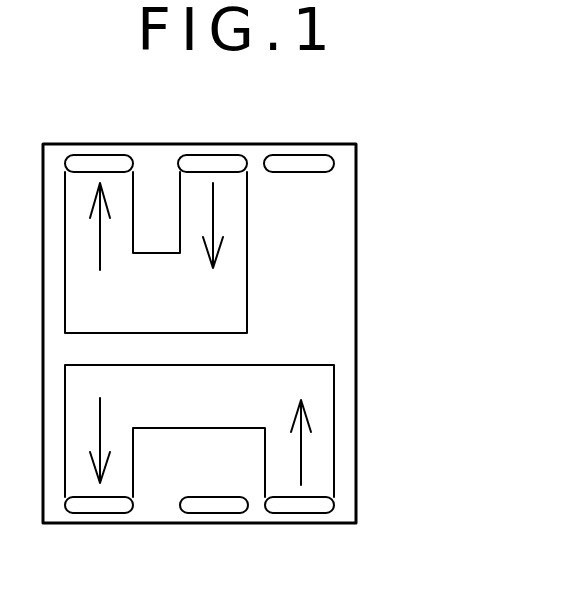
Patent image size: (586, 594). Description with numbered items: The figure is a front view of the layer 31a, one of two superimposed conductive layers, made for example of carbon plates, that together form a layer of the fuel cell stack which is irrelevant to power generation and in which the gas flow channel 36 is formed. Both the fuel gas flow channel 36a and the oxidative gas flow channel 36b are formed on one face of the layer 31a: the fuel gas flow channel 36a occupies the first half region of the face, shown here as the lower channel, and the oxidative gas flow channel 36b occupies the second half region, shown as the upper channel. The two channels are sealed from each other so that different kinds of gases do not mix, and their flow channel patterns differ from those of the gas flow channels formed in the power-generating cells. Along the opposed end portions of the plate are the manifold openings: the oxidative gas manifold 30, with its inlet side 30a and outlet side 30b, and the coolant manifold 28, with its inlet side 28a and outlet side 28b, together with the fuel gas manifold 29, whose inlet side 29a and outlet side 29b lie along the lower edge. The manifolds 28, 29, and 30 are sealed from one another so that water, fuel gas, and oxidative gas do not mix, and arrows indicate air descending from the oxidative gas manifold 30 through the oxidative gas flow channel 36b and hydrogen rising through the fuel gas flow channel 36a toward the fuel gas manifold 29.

The layer 31a is at (356, 197).
The gas flow channel 36 is at (307, 334).
The oxidative gas flow channel 36b is at (247, 255).
The fuel gas flow channel 36a is at (262, 431).
The oxidative gas manifold 30 is at (162, 135).
The outlet side of oxidative gas manifold 30b is at (95, 158).
The inlet side of oxidative gas manifold 30a is at (233, 128).
The coolant manifold 28 is at (294, 335).
The outlet side of coolant manifold 28b is at (317, 158).
The inlet side of coolant manifold 28a is at (213, 504).
The fuel gas manifold 29 is at (273, 534).
The outlet side of fuel gas manifold 29b is at (95, 505).
The inlet side of fuel gas manifold 29a is at (327, 505).